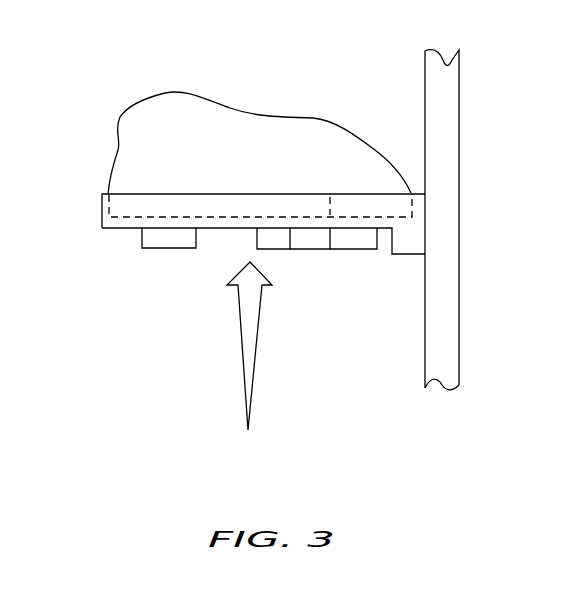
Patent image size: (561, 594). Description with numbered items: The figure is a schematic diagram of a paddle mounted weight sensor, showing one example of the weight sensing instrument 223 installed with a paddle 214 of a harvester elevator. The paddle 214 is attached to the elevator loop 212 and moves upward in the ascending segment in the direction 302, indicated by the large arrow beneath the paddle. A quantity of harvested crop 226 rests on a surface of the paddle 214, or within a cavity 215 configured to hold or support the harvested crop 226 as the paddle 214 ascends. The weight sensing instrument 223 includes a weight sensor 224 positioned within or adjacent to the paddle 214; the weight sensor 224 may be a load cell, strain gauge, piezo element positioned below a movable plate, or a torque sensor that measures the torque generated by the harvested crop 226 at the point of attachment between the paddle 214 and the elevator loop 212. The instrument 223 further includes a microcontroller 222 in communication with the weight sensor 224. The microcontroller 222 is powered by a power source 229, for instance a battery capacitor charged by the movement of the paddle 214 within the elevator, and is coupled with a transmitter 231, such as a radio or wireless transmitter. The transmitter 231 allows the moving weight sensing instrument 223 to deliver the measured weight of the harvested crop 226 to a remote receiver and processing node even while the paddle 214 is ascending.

The elevator loop 212 is at (452, 142).
The paddle 214 is at (102, 229).
The cavity 215 is at (328, 188).
The microcontroller 222 is at (270, 242).
The weight sensing instrument 223 is at (187, 285).
The weight sensor 224 is at (173, 242).
The harvested crop 226 is at (313, 137).
The power source 229 is at (317, 243).
The transmitter 231 is at (357, 243).
The direction 302 is at (258, 320).